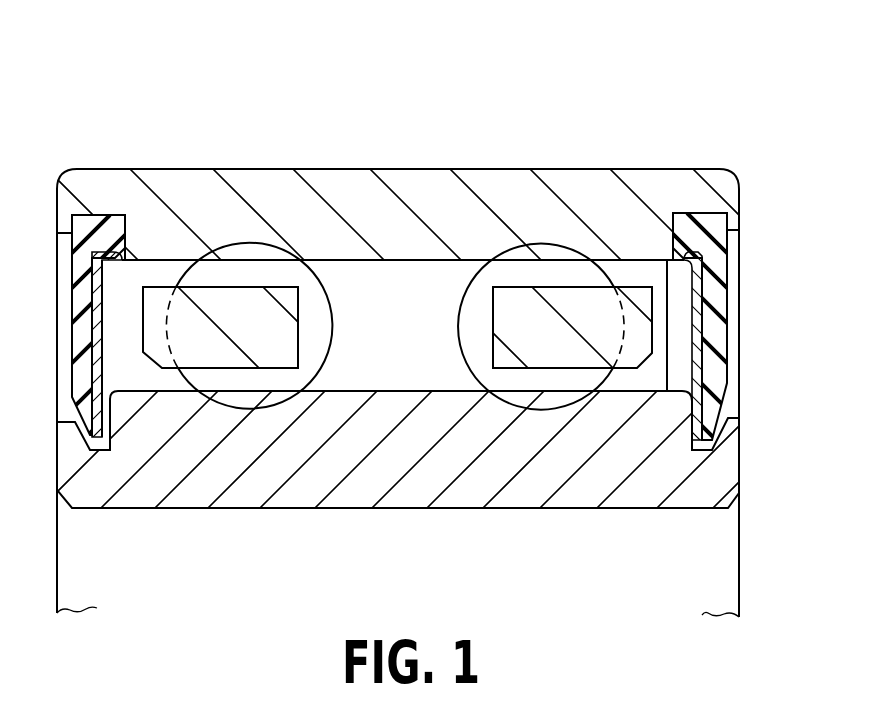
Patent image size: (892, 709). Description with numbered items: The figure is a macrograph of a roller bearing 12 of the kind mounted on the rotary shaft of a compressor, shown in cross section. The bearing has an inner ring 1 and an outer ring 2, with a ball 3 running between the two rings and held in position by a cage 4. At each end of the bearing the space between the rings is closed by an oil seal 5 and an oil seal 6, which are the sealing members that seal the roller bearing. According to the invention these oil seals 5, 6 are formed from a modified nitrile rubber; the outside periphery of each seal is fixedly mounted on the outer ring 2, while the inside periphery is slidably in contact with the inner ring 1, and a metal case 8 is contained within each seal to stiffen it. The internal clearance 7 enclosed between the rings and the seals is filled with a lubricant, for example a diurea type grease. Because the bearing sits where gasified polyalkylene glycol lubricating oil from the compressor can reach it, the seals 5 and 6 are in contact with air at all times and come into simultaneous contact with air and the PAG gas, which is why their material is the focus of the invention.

The inner ring 1 is at (309, 490).
The outer ring 2 is at (352, 186).
The ball 3 is at (257, 267).
The cage 4 is at (168, 285).
The oil seal 5 is at (720, 298).
The oil seal 6 is at (82, 355).
The internal clearance 7 is at (381, 313).
The metal case 8 is at (110, 315).
The roller bearing 12 is at (606, 82).